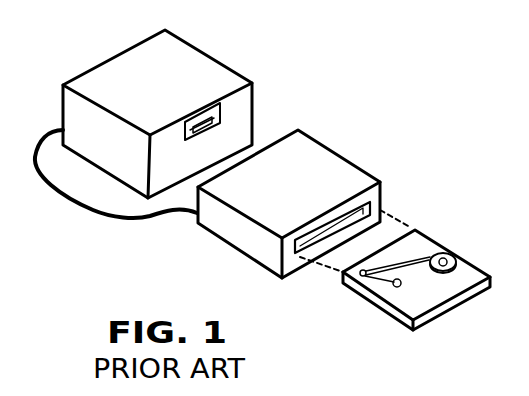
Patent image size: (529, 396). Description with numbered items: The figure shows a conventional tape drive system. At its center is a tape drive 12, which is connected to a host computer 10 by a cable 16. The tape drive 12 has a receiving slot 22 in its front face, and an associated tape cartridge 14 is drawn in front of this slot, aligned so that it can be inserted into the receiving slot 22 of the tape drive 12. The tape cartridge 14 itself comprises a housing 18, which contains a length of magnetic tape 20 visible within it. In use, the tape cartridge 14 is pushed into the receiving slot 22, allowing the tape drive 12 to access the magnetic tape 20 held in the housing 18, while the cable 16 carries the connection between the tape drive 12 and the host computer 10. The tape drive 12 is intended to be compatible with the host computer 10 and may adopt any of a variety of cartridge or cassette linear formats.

The host computer 10 is at (233, 55).
The tape drive 12 is at (359, 147).
The tape cartridge 14 is at (456, 232).
The cable 16 is at (93, 209).
The housing 18 is at (457, 298).
The magnetic tape 20 is at (410, 268).
The receiving slot 22 is at (374, 217).